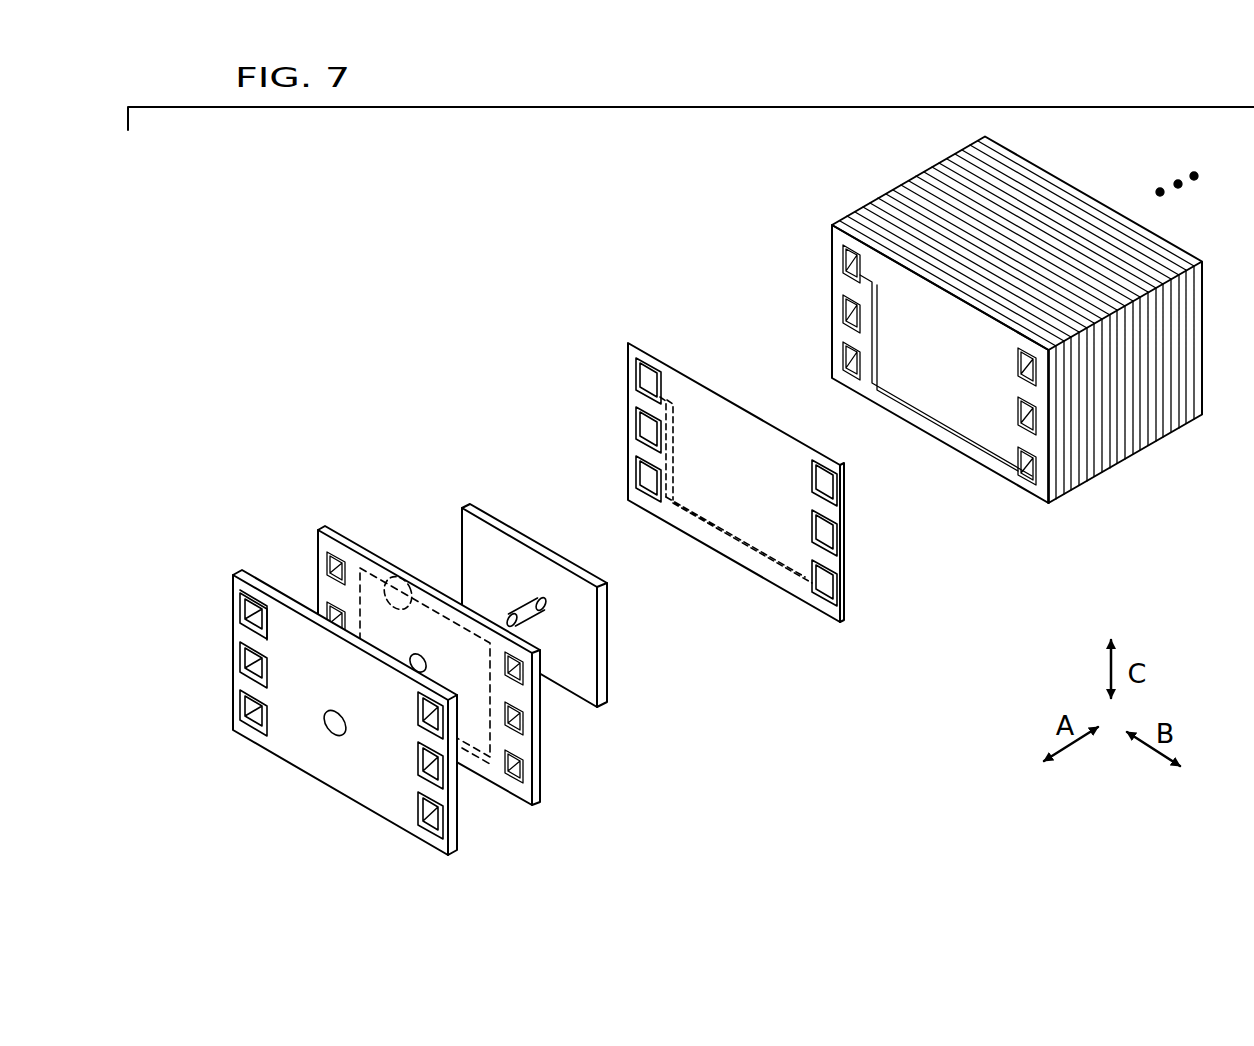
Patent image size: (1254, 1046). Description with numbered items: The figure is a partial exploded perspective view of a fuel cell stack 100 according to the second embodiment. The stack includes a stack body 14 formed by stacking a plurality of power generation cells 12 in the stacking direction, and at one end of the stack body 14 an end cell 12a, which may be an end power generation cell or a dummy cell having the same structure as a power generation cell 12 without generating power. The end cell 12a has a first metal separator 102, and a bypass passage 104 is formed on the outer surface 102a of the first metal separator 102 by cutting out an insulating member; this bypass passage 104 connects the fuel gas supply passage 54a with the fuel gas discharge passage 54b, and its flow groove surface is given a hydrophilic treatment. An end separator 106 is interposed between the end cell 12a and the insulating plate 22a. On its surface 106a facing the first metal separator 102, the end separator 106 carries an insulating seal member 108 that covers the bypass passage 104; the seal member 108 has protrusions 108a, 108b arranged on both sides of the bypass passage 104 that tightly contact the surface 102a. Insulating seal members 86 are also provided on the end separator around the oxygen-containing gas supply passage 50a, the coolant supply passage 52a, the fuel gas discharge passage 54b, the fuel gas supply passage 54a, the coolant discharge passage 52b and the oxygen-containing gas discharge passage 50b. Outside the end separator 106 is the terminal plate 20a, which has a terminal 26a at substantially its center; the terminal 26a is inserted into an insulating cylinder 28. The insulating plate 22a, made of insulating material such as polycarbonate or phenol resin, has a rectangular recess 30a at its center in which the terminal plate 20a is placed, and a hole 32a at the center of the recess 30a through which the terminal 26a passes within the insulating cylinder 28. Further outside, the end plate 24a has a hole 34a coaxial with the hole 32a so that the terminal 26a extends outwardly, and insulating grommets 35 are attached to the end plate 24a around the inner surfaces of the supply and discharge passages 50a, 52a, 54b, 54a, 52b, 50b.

The fuel cell stack 100 is at (405, 277).
The first metal separator 102 is at (900, 337).
The outer surface of the first metal separator 102a is at (975, 455).
The bypass passage 104 is at (900, 405).
The end separator 106 is at (702, 478).
The surface of the end separator 106a is at (827, 630).
The insulating seal member 108 is at (727, 522).
The protrusion 108a is at (694, 530).
The protrusion 108b is at (648, 592).
The insulating seal members 86 is at (648, 358).
The power generation cell 12 is at (1124, 463).
The end cell 12a is at (1057, 500).
The stack body 14 is at (1038, 343).
The terminal plate 20a is at (500, 545).
The terminal 26a is at (507, 617).
The insulating cylinder 28 is at (538, 616).
The insulating plate 22a is at (316, 524).
The rectangular recess 30a is at (393, 577).
The hole 32a is at (421, 654).
The end plate 24a is at (312, 792).
The hole 34a is at (327, 720).
The insulating grommets 35 is at (242, 600).
The fuel gas supply passage 54a is at (240, 612).
The coolant discharge passage 52b is at (240, 660).
The oxygen-containing gas discharge passage 50b is at (240, 710).
The oxygen-containing gas supply passage 50a is at (418, 712).
The coolant supply passage 52a is at (418, 762).
The fuel gas discharge passage 54b is at (424, 832).